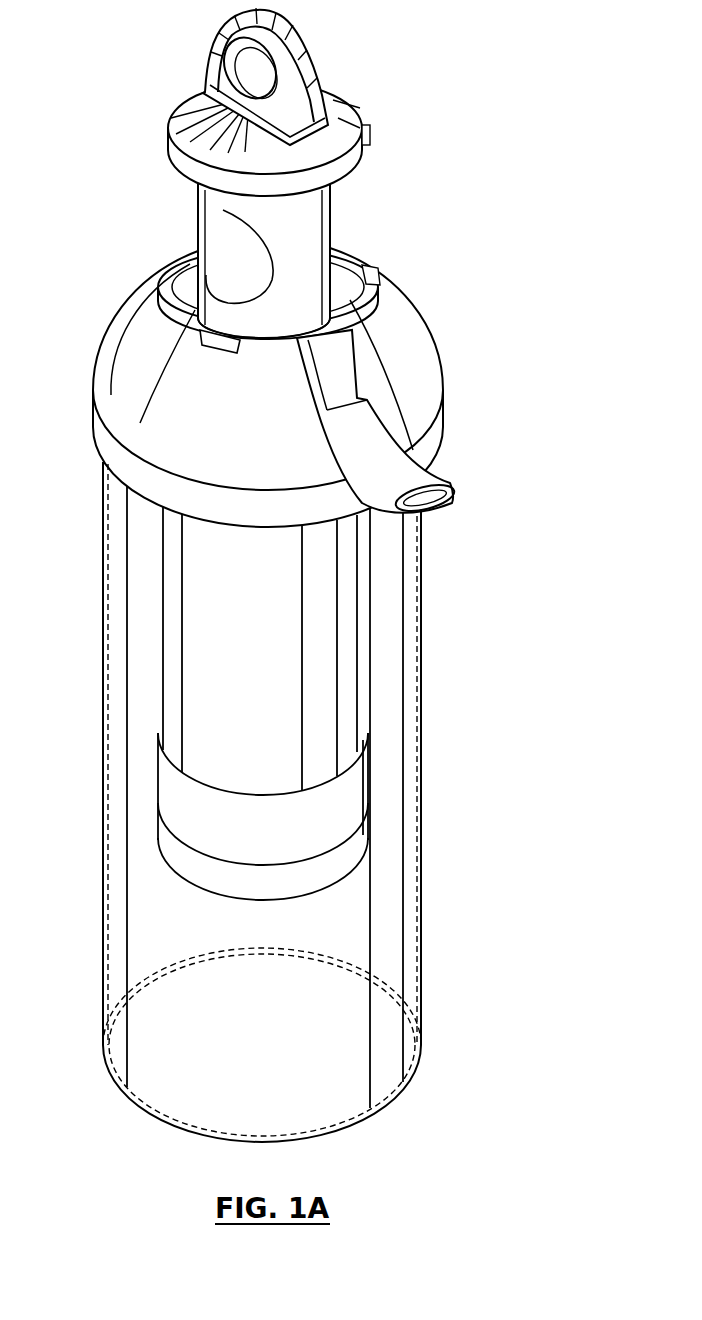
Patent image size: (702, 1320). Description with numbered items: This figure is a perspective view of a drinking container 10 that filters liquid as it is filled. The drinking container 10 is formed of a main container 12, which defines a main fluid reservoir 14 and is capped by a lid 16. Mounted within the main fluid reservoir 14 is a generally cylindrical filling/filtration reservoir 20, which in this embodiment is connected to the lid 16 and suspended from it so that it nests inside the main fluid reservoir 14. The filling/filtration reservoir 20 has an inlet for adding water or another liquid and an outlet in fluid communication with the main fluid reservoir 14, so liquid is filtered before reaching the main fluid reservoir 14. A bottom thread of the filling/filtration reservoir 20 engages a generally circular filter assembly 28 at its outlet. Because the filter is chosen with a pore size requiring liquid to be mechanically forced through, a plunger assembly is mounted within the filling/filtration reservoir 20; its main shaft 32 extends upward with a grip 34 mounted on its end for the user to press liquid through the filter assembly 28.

The drinking container 10 is at (317, 575).
The main container 12 is at (403, 907).
The main fluid reservoir 14 is at (275, 935).
The lid 16 is at (382, 288).
The filling/filtration reservoir 20 is at (265, 645).
The filter assembly 28 is at (340, 808).
The main shaft 32 is at (337, 225).
The grip 34 is at (342, 82).